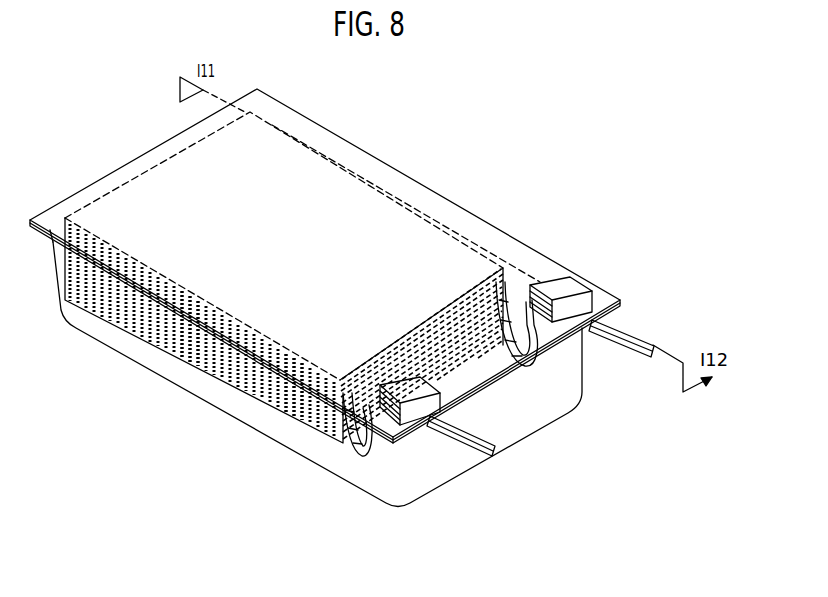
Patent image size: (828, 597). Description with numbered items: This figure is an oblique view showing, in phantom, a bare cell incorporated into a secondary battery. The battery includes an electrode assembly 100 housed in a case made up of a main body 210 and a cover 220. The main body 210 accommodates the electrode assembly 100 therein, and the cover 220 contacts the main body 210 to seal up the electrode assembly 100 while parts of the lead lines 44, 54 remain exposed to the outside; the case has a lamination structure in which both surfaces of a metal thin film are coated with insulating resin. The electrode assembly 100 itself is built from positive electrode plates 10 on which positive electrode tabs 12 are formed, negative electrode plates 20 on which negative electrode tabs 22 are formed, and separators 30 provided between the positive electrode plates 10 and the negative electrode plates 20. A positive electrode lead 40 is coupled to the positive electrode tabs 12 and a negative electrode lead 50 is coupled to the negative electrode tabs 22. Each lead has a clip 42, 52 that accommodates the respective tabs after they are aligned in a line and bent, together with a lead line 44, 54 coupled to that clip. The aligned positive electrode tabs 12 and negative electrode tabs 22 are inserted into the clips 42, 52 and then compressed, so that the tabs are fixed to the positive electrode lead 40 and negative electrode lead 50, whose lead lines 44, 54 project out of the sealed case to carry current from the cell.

The electrode assembly 100 is at (485, 138).
The cover 220 is at (150, 152).
The main body 210 is at (480, 468).
The positive electrode plate 10 is at (137, 248).
The positive electrode tab 12 is at (535, 285).
The negative electrode plate 20 is at (293, 387).
The negative electrode tab 22 is at (350, 445).
The separator 30 is at (193, 297).
The positive electrode lead 40 is at (671, 262).
The clip 42 is at (577, 298).
The lead line 44 is at (622, 332).
The negative electrode lead 50 is at (442, 548).
The clip 52 is at (388, 440).
The lead line 54 is at (447, 435).